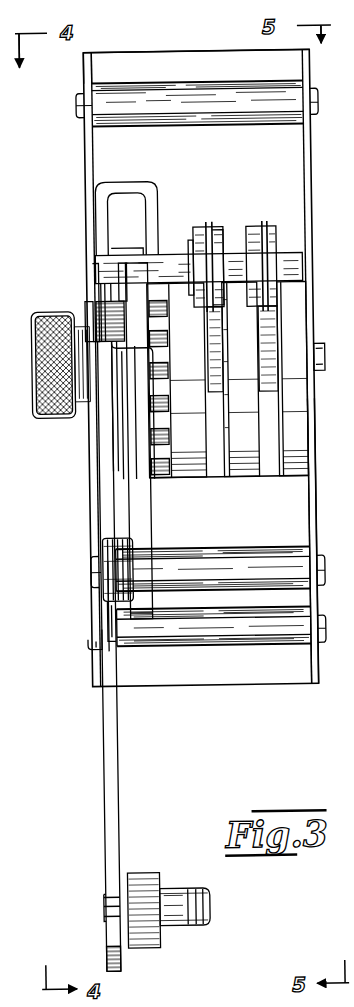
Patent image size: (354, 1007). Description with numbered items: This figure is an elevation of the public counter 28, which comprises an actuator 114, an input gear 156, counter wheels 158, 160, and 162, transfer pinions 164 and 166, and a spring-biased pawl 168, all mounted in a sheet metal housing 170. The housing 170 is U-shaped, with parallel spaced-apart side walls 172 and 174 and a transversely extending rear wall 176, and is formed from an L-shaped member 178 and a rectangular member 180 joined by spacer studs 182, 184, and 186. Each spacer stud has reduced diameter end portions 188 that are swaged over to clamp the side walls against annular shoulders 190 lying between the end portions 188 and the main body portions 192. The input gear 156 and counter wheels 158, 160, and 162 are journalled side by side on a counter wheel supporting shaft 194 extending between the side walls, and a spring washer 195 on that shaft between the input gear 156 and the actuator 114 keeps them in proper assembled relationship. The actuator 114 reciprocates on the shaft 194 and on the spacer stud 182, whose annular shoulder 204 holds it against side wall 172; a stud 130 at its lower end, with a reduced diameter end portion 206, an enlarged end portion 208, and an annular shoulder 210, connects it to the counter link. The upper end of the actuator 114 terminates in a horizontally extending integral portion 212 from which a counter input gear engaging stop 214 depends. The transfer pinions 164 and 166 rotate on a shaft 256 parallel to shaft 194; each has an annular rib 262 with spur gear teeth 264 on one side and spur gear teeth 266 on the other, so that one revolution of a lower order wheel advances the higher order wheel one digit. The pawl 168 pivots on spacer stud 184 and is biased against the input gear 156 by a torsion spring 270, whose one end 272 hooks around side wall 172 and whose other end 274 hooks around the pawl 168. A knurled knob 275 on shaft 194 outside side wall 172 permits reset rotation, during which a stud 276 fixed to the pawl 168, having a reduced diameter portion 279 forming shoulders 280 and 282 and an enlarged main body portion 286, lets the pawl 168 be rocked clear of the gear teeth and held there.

The public counter 28 is at (188, 52).
The actuator 114 is at (115, 790).
The stud 130 is at (205, 902).
The input gear 156 is at (160, 478).
The counter wheel 158 is at (196, 478).
The counter wheel 160 is at (243, 478).
The counter wheel 162 is at (300, 450).
The transfer pinion 164 is at (194, 240).
The transfer pinion 166 is at (262, 230).
The spring-biased pawl 168 is at (151, 532).
The sheet metal housing 170 is at (240, 690).
The side wall 172 is at (86, 164).
The side wall 174 is at (304, 163).
The rear wall 176 is at (145, 62).
The L-shaped member 178 is at (82, 80).
The rectangular member 180 is at (312, 162).
The spacer stud 182 is at (166, 624).
The spacer stud 184 is at (229, 548).
The spacer stud 186 is at (266, 97).
The reduced diameter end portion 188 is at (80, 101).
The annular shoulder 190 is at (90, 110).
The main body portion 192 is at (212, 95).
The counter wheel supporting shaft 194 is at (317, 373).
The spring washer 195 is at (130, 400).
The annular shoulder 204 is at (104, 622).
The reduced diameter end portion 206 is at (174, 926).
The enlarged diameter end portion 208 is at (144, 948).
The annular shoulder 210 is at (153, 872).
The horizontally extending integral portion 212 is at (134, 181).
The counter input gear engaging stop 214 is at (146, 208).
The shaft 256 is at (298, 262).
The annular rib 262 is at (196, 250).
The spur gear teeth 264 is at (210, 225).
The spur gear teeth 266 is at (222, 230).
The torsion spring 270 is at (97, 538).
The torsion spring end 272 is at (94, 650).
The torsion spring end 274 is at (156, 346).
The knurled knob 275 is at (56, 418).
The stud 276 is at (96, 305).
The reduced diameter portion 279 is at (97, 318).
The shoulder 280 is at (100, 313).
The shoulder 282 is at (86, 318).
The main body portion 286 is at (142, 326).